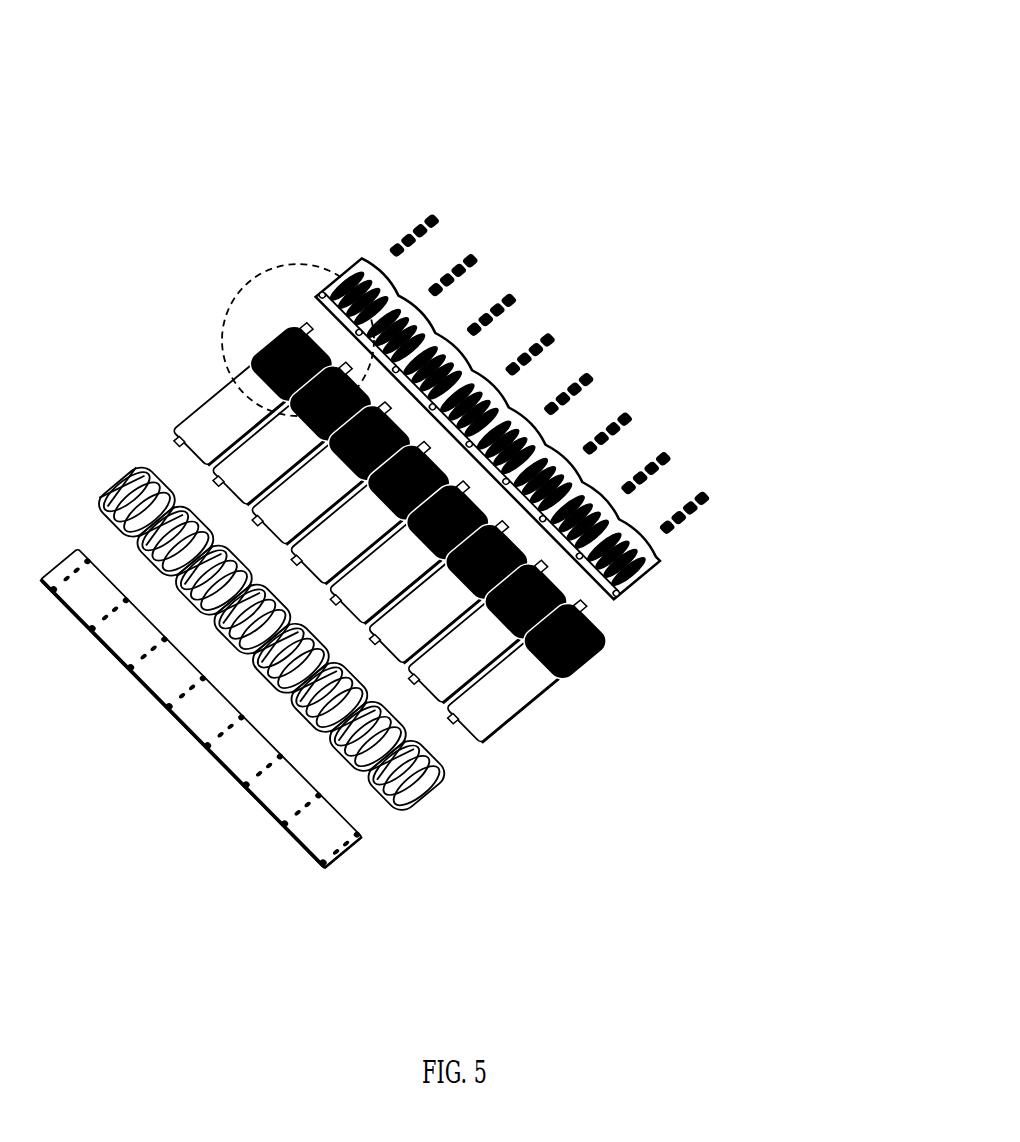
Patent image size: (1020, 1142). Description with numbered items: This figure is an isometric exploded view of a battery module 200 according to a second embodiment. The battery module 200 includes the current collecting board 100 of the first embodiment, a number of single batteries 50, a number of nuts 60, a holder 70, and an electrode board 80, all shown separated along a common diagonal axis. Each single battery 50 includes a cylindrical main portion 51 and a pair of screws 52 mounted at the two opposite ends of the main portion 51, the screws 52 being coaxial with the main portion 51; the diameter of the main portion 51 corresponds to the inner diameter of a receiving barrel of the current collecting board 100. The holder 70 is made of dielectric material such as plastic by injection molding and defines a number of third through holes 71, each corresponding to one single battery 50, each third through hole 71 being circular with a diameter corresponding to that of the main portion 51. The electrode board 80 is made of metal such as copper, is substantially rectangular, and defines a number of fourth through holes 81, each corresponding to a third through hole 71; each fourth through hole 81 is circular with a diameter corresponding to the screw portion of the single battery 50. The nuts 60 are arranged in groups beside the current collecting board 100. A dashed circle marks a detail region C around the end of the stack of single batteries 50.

The battery module 200 is at (478, 50).
The detail region C is at (248, 284).
The single battery 50 is at (508, 683).
The main portion 51 is at (533, 677).
The screw 52 is at (583, 612).
The nut 60 is at (672, 457).
The holder 70 is at (423, 807).
The third through hole 71 is at (403, 800).
The electrode board 80 is at (313, 837).
The fourth through hole 81 is at (340, 860).
The current collecting board 100 is at (607, 550).